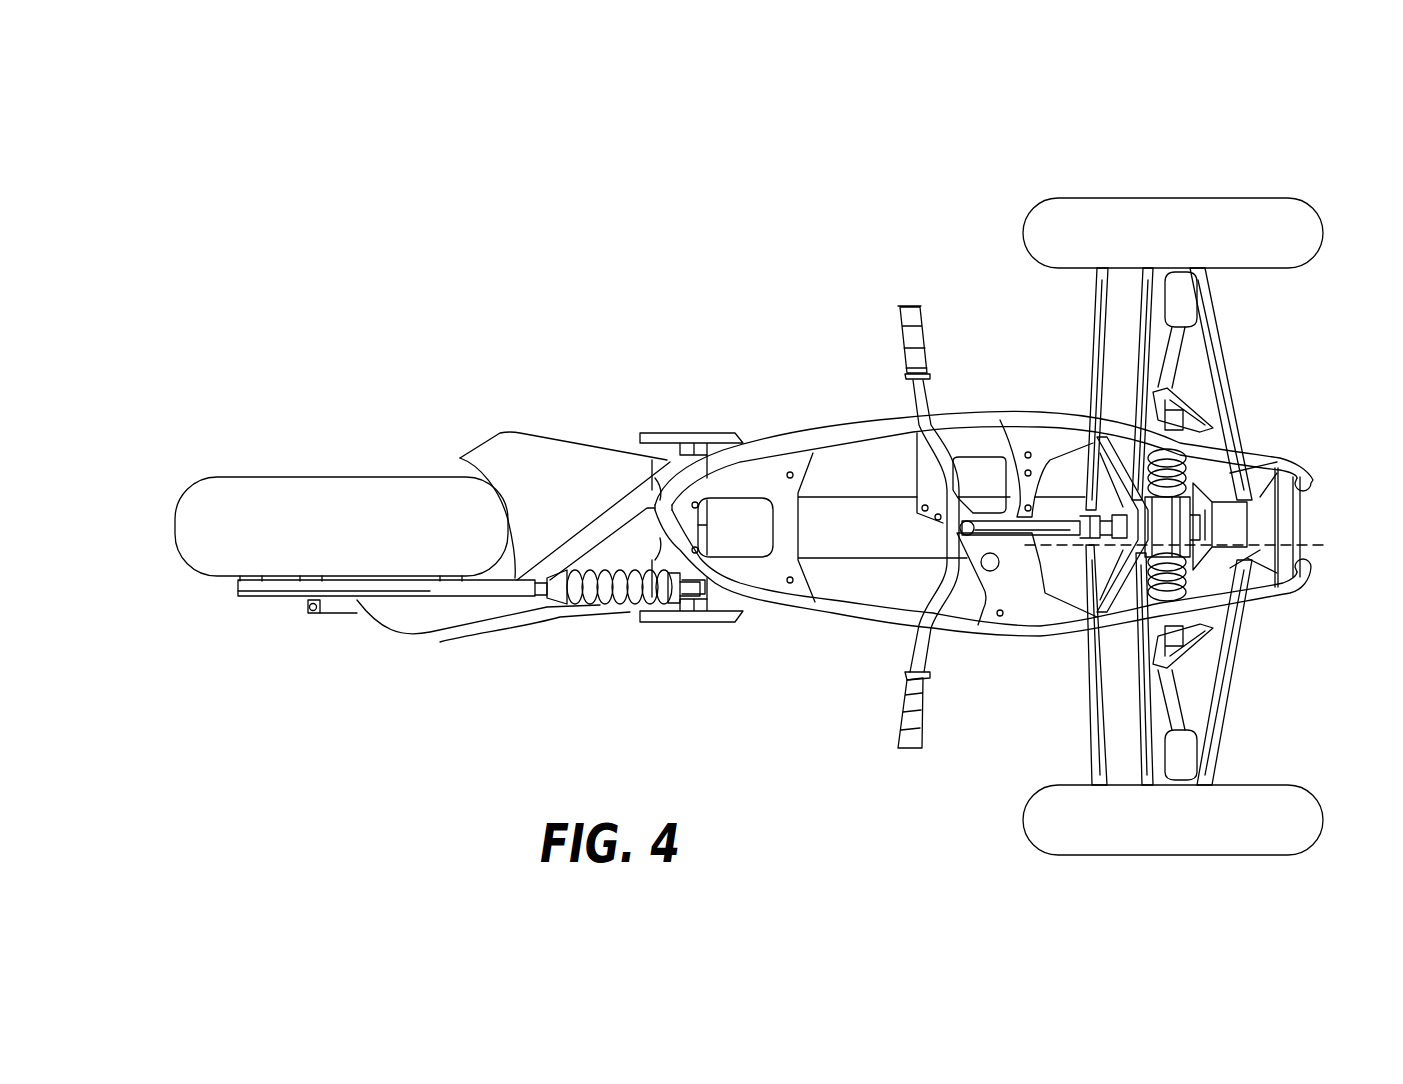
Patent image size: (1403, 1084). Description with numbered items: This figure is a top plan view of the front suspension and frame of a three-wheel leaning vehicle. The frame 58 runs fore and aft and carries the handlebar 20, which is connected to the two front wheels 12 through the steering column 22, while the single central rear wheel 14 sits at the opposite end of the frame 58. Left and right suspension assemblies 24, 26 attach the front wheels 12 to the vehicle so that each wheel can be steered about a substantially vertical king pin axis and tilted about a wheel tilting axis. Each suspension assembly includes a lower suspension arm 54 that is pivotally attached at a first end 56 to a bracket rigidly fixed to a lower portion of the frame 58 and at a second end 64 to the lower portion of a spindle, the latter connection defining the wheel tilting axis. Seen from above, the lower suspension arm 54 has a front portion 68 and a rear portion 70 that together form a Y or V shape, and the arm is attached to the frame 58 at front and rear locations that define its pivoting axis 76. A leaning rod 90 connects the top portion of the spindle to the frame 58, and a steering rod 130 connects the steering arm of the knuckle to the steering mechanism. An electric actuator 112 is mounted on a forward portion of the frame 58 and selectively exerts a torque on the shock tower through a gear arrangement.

The front wheel 12 is at (1098, 220).
The rear wheel 14 is at (362, 508).
The handlebar 20 is at (900, 715).
The steering column 22 is at (1018, 515).
The left suspension assembly 24 is at (1274, 388).
The right suspension assembly 26 is at (1282, 669).
The lower suspension arm 54 is at (1222, 357).
The first end 56 is at (1240, 473).
The frame 58 is at (802, 412).
The second end 64 is at (1205, 280).
The front portion 68 is at (1228, 632).
The rear portion 70 is at (1120, 610).
The pivoting axis 76 is at (1078, 548).
The leaning rod 90 is at (1136, 688).
The electric actuator 112 is at (1263, 520).
The steering rod 130 is at (1087, 707).